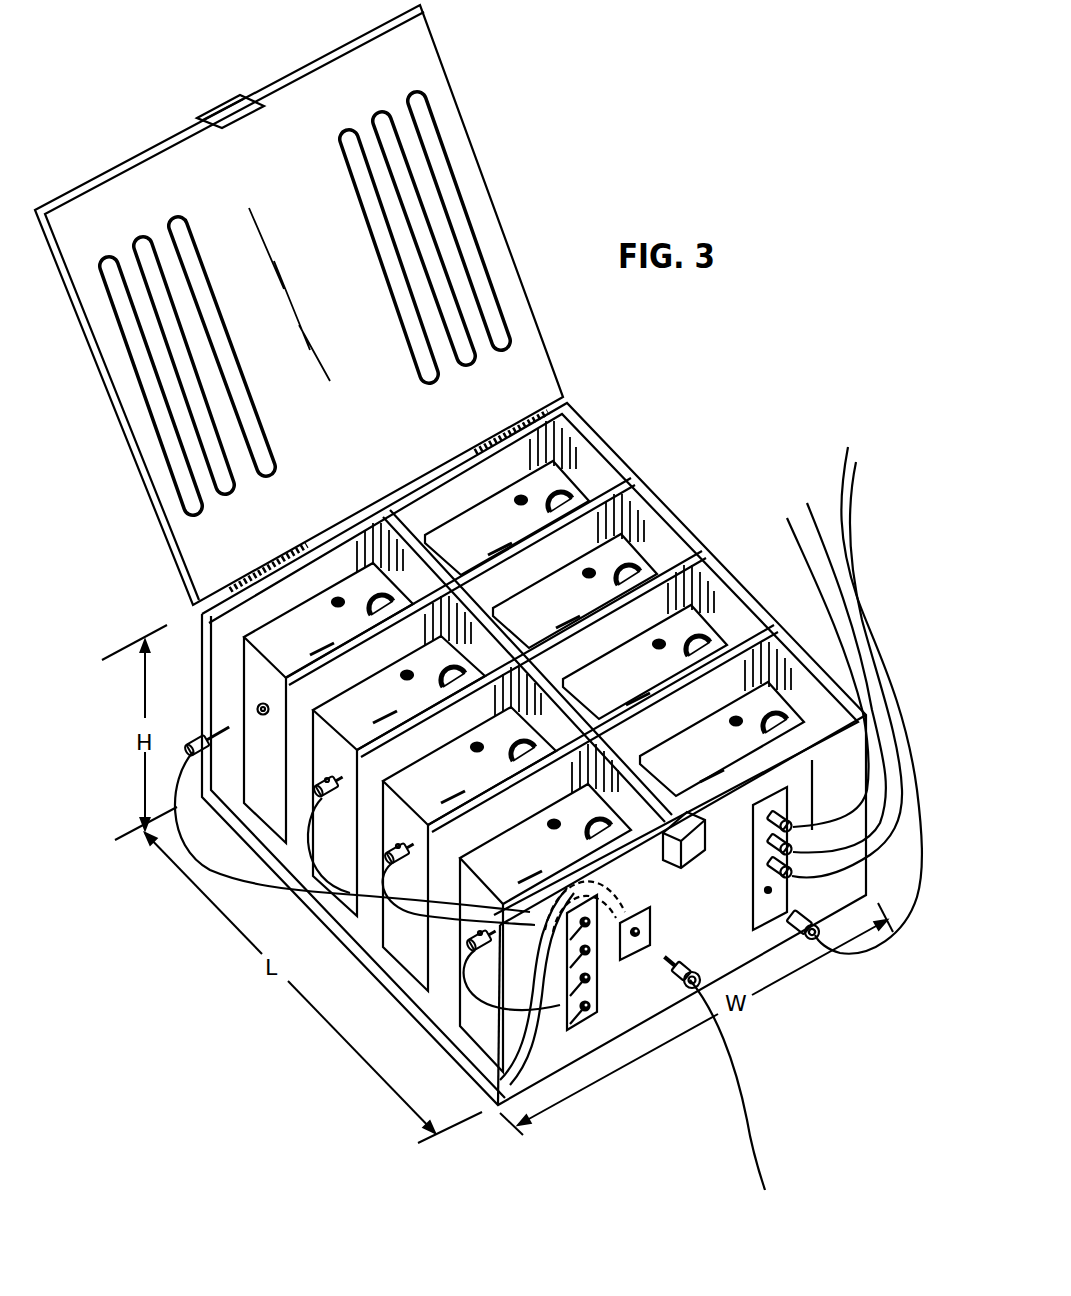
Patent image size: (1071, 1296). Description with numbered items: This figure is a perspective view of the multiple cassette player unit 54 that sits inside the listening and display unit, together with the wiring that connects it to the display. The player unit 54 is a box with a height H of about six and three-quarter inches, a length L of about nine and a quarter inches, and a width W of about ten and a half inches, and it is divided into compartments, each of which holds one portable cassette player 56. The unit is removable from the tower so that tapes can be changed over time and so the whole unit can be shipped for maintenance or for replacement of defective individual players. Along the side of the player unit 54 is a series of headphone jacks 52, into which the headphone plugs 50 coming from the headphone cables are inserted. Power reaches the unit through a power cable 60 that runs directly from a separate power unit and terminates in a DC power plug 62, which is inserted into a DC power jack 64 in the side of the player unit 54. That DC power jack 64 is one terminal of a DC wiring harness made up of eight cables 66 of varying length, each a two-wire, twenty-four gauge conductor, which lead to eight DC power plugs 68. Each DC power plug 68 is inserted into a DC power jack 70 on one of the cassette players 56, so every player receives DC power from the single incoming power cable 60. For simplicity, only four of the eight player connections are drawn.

The headphone plugs 50 is at (790, 931).
The headphone jacks 52 is at (763, 890).
The multiple cassette player unit 54 is at (681, 515).
The portable cassette player 56 is at (722, 768).
The power cable 60 is at (745, 1090).
The DC power plug 62 is at (690, 970).
The DC power jack 64 is at (636, 950).
The cables 66 is at (485, 998).
The DC power plugs 68 is at (481, 952).
The DC power jack 70 is at (484, 940).